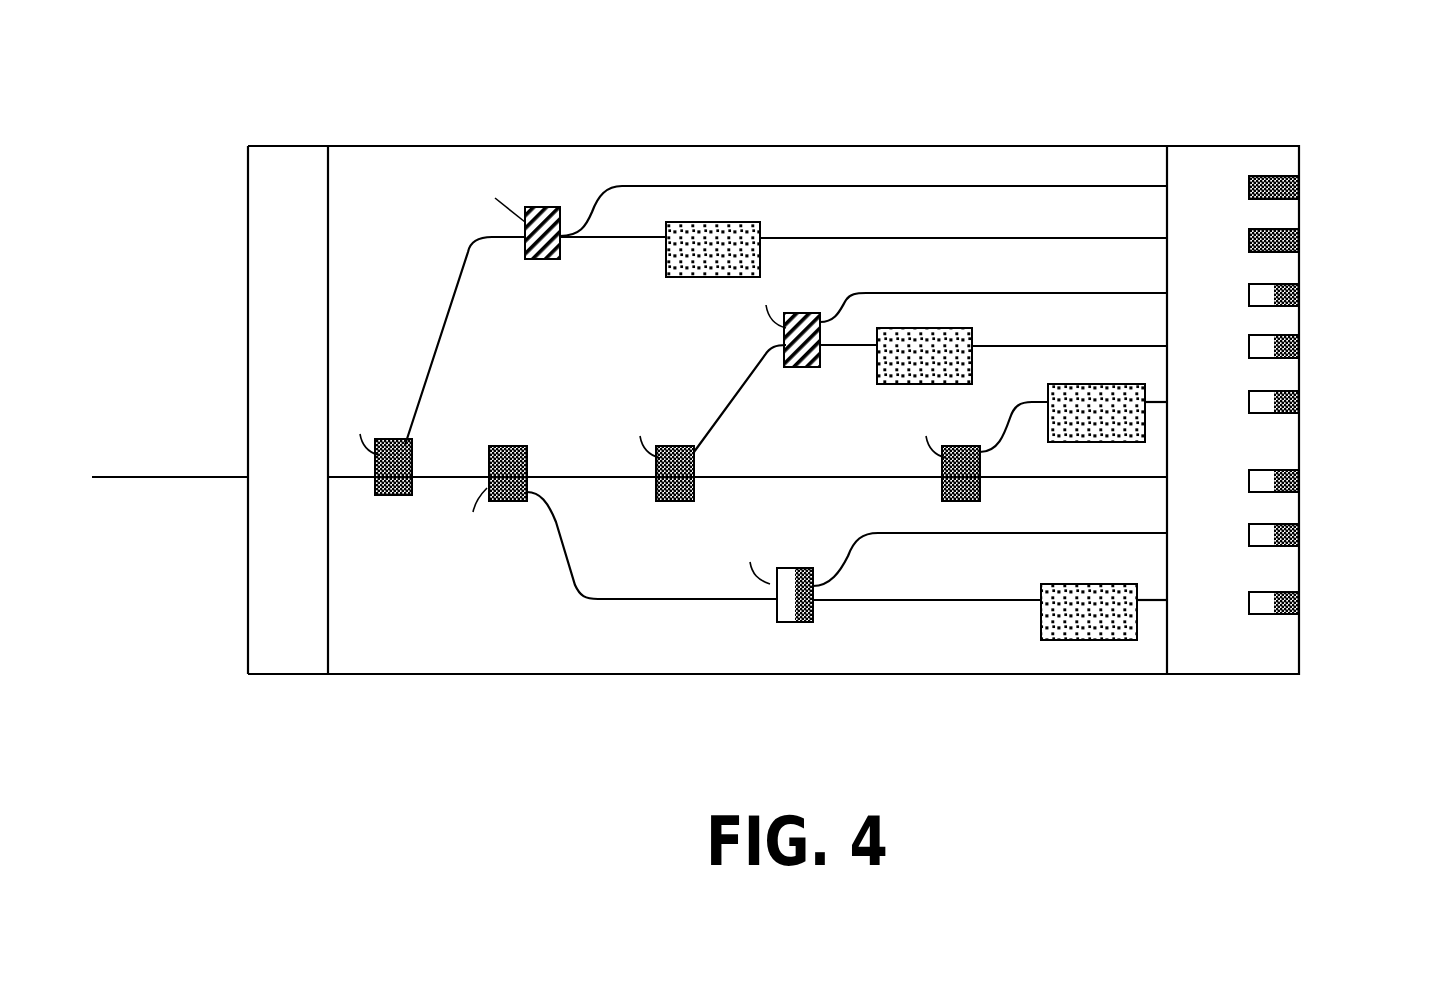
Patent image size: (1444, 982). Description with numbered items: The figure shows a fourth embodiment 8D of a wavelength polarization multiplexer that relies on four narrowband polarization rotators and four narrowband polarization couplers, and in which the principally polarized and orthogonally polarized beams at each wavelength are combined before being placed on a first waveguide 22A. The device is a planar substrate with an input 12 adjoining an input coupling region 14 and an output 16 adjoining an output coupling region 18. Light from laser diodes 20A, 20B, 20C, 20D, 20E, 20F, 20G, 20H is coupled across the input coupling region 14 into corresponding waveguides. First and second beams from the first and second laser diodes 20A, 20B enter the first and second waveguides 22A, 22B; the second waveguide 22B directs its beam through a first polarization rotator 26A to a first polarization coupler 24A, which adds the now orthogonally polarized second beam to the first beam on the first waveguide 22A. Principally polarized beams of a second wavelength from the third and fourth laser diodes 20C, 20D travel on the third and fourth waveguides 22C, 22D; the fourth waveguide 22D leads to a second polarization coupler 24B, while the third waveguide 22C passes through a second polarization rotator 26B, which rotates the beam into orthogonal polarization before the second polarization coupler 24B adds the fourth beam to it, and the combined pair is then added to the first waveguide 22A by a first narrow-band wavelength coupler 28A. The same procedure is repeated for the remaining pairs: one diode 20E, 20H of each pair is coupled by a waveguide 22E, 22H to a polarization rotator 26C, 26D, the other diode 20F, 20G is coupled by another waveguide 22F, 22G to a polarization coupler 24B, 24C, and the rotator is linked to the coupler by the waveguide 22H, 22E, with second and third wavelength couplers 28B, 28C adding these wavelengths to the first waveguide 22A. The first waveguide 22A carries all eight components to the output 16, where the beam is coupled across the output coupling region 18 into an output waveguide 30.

The fourth embodiment 8D is at (1068, 70).
The input 12 is at (1168, 653).
The input coupling region 14 is at (1278, 659).
The output 16 is at (328, 594).
The output coupling region 18 is at (305, 238).
The output waveguide 30 is at (175, 476).
The first waveguide 22A is at (752, 478).
The second waveguide 22B is at (1003, 427).
The third waveguide 22C is at (1017, 346).
The fourth waveguide 22D is at (1017, 293).
The fifth waveguide 22E is at (1017, 238).
The sixth waveguide 22F is at (946, 190).
The seventh waveguide 22G is at (1018, 533).
The eighth waveguide 22H is at (890, 598).
The first polarization coupler 24A is at (942, 497).
The second polarization coupler 24B is at (802, 313).
The third polarization coupler 24C is at (545, 259).
The first polarization rotator 26A is at (1120, 442).
The second polarization rotator 26B is at (882, 383).
The third polarization rotator 26C is at (1046, 640).
The fourth polarization rotator 26D is at (730, 277).
The first narrow-band wavelength coupler 28A is at (680, 501).
The second wavelength coupler 28B is at (511, 446).
The third wavelength coupler 28C is at (390, 495).
The first laser diode 20A is at (1299, 483).
The second laser diode 20B is at (1299, 404).
The third laser diode 20C is at (1299, 349).
The fourth laser diode 20D is at (1299, 297).
The fifth laser diode 20E is at (1299, 244).
The sixth laser diode 20F is at (1299, 191).
The seventh laser diode 20G is at (1299, 537).
The eighth laser diode 20H is at (1299, 605).